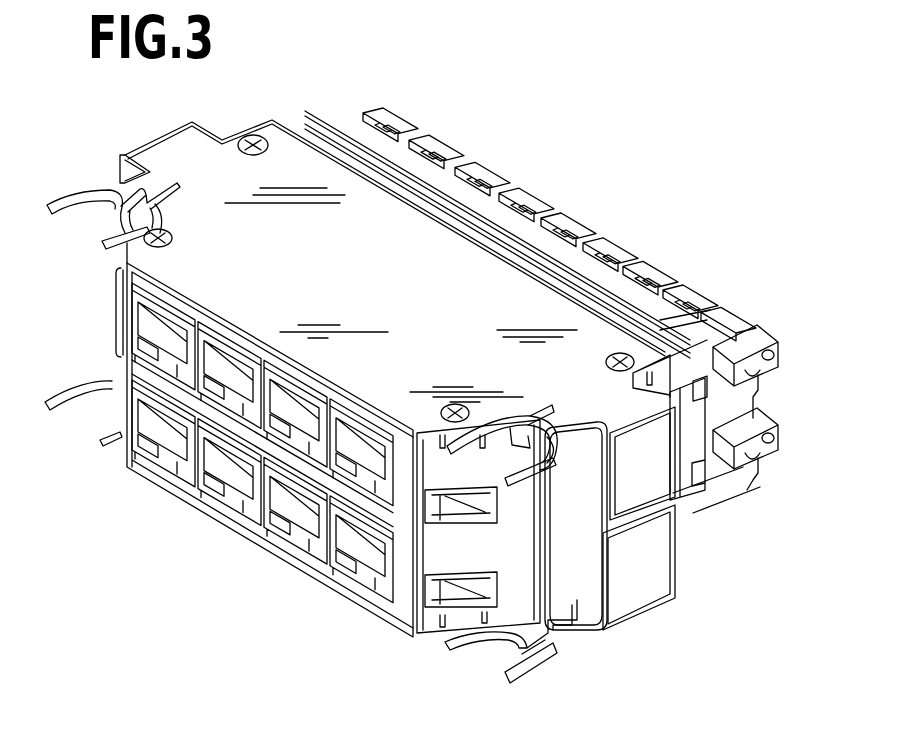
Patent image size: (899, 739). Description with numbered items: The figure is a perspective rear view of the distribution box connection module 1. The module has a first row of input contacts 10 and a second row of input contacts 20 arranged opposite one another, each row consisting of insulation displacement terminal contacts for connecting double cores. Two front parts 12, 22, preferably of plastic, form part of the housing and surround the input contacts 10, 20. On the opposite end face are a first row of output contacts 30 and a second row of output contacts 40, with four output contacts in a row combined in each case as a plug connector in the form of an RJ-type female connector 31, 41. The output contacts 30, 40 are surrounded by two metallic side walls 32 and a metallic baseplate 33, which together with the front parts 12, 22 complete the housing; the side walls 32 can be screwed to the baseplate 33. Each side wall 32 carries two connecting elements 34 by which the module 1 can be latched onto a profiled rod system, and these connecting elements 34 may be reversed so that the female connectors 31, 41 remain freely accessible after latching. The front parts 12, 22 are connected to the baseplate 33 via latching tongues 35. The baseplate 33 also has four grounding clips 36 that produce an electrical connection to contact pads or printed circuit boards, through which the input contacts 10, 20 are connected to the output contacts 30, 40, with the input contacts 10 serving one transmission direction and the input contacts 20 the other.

The distribution box connection module 1 is at (610, 210).
The first row of input contacts 10 is at (697, 529).
The front part 12 is at (752, 422).
The second row of input contacts 20 is at (362, 112).
The front part 22 is at (505, 190).
The first row of output contacts 30 is at (360, 590).
The RJ-45 female connector 31 is at (292, 520).
The side wall 32 is at (390, 211).
The baseplate 33 is at (579, 572).
The connecting element 34 is at (83, 185).
The latching tongue 35 is at (683, 405).
The grounding clip 36 is at (466, 496).
The second row of output contacts 40 is at (113, 312).
The RJ-45 female connector 41 is at (235, 390).